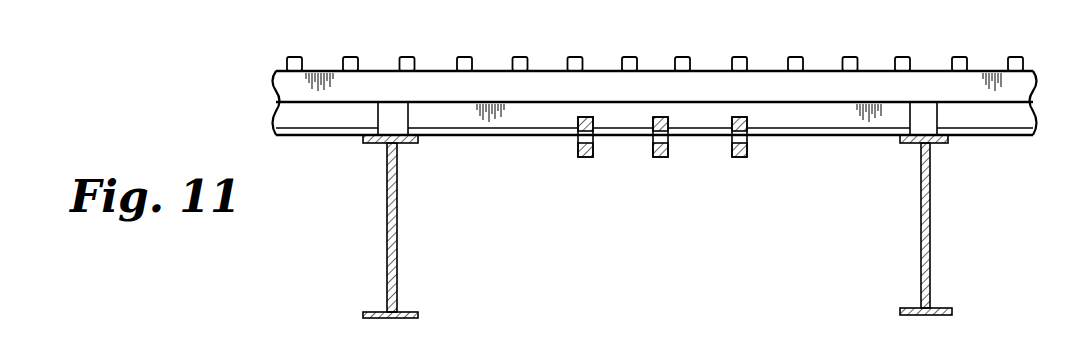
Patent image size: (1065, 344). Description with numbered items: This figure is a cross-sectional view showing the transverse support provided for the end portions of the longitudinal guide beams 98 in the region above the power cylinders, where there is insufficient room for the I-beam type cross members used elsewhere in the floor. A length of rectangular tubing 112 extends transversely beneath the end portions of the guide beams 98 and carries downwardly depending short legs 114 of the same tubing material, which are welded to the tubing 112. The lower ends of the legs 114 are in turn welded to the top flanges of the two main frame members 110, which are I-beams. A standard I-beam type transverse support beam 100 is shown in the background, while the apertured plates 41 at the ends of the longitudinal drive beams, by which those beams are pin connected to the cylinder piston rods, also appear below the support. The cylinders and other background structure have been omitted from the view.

The rectangular tubing 112 is at (431, 72).
The longitudinal guide beams 98 is at (577, 57).
The transverse support beams 100 is at (512, 117).
The short legs 114 is at (378, 116).
The apertured plates 41 is at (585, 158).
The main frame members 110 is at (398, 258).